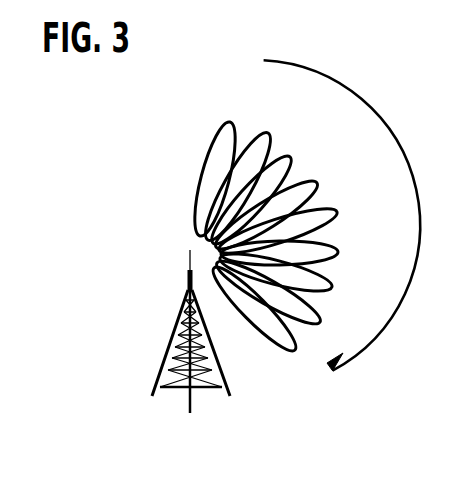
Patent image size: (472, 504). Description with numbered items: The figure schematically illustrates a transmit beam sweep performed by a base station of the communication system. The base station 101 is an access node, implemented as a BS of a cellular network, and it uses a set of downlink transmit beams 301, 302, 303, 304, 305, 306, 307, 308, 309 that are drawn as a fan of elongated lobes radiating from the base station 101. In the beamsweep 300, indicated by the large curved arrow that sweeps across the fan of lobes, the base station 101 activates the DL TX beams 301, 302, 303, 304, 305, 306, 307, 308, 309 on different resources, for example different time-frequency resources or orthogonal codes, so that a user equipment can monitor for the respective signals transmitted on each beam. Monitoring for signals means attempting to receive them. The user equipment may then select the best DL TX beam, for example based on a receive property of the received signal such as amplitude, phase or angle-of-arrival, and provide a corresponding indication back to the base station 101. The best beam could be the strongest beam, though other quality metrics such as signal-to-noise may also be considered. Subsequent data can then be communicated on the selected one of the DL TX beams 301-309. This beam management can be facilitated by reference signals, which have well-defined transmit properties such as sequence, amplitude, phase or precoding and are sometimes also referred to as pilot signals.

The beamsweep 300 is at (342, 85).
The DL TX beam 301 is at (224, 124).
The DL TX beam 302 is at (254, 130).
The DL TX beam 303 is at (287, 150).
The DL TX beam 304 is at (312, 177).
The DL TX beam 305 is at (333, 202).
The DL TX beam 306 is at (334, 256).
The DL TX beam 307 is at (327, 300).
The DL TX beam 308 is at (312, 330).
The DL TX beam 309 is at (284, 356).
The base station 101 is at (190, 417).